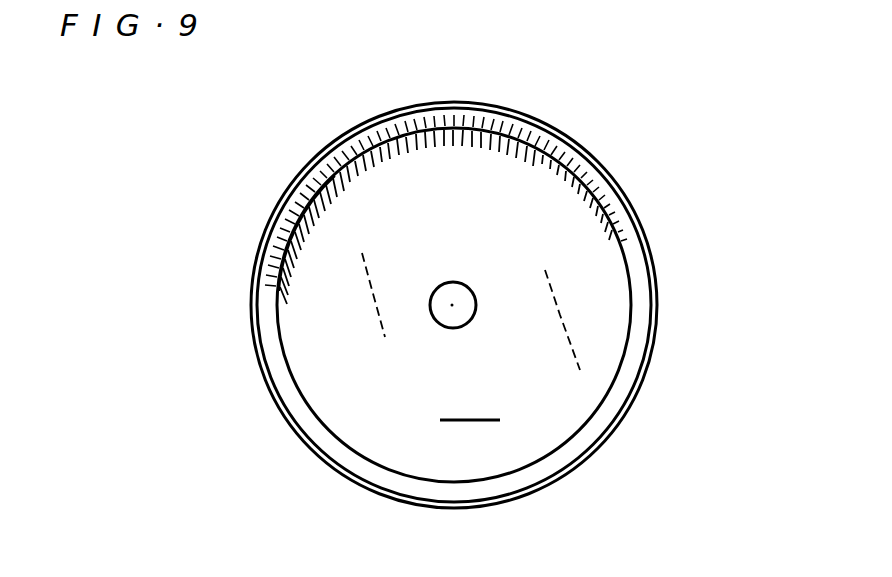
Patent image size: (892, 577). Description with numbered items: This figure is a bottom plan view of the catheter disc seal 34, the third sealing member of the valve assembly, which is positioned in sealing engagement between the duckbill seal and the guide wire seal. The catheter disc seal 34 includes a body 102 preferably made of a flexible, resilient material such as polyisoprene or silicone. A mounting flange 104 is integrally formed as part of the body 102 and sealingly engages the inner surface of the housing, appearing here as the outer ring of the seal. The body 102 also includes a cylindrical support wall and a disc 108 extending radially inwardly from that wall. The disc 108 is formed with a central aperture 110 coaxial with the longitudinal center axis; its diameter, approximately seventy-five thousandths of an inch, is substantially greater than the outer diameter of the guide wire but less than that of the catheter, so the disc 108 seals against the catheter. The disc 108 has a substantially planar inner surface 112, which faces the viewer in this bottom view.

The catheter disc seal 34 is at (526, 107).
The body 102 is at (633, 203).
The mounting flange 104 is at (582, 170).
The disc 108 is at (578, 312).
The aperture 110 is at (440, 283).
The inner surface 112 is at (470, 401).